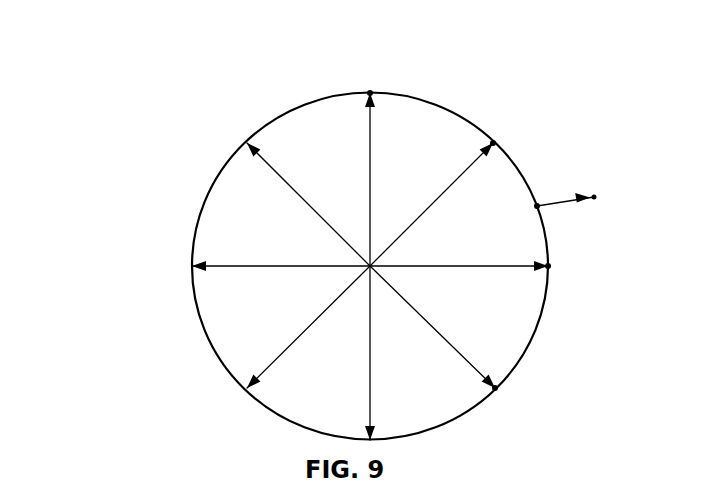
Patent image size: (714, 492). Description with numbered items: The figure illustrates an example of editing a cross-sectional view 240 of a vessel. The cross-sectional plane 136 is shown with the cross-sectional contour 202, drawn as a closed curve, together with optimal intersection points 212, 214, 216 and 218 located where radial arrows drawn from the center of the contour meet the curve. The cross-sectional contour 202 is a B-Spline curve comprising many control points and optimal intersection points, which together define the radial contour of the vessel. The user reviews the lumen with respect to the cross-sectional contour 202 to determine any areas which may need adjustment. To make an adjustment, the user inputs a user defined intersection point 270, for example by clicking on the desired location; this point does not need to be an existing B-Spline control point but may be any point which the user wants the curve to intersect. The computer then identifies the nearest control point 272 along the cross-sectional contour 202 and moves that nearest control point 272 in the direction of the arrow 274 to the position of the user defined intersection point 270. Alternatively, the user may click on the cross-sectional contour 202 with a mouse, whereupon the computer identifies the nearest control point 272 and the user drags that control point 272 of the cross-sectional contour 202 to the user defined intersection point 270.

The cross-sectional view 240 is at (116, 56).
The cross-sectional plane 136 is at (187, 188).
The cross-sectional contour 202 is at (283, 112).
The optimal intersection point 212 is at (370, 92).
The optimal intersection point 214 is at (495, 142).
The optimal intersection point 216 is at (548, 266).
The optimal intersection point 218 is at (495, 388).
The user defined intersection point 270 is at (596, 196).
The nearest control point 272 is at (537, 205).
The arrow 274 is at (556, 204).